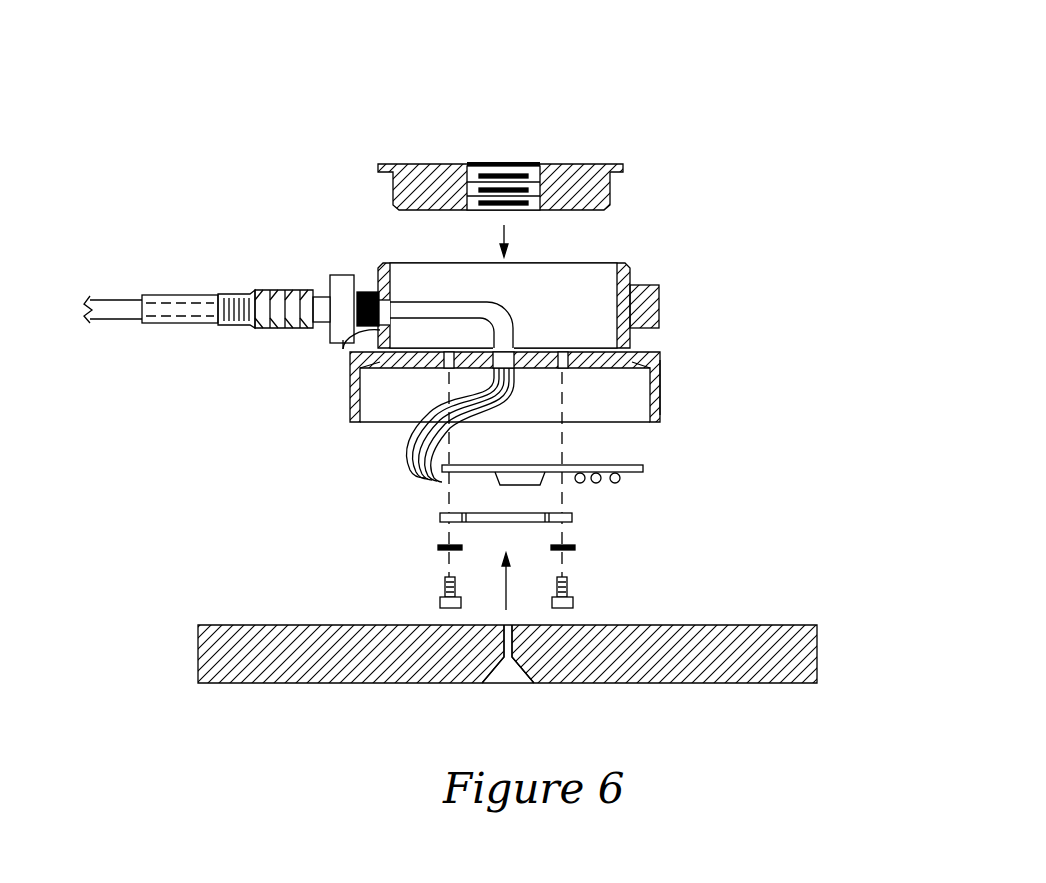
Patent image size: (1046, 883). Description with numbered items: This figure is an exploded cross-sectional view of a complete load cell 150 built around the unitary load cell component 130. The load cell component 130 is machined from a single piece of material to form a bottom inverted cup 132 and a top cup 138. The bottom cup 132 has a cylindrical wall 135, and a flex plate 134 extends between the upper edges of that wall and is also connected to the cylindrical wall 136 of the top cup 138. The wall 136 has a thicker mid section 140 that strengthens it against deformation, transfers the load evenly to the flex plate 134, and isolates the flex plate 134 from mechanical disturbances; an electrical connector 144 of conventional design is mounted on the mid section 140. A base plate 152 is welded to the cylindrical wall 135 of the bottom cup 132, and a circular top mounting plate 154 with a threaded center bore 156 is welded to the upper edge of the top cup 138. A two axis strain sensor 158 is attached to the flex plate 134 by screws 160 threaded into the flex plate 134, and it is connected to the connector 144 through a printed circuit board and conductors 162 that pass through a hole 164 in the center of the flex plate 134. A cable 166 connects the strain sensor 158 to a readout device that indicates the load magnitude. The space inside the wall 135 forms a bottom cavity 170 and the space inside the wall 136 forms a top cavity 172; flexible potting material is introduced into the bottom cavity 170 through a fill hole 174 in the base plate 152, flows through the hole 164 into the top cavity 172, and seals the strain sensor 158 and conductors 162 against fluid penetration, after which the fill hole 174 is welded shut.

The load cell component 130 is at (670, 276).
The bottom inverted cup 132 is at (660, 350).
The flex plate 134 is at (530, 348).
The cylindrical wall 135 is at (662, 392).
The cylindrical wall 136 is at (340, 348).
The top cup 138 is at (628, 270).
The thicker mid section 140 is at (655, 312).
The electrical connector 144 is at (372, 290).
The load cell 150 is at (710, 108).
The base plate 152 is at (783, 642).
The circular top mounting plate 154 is at (565, 186).
The threaded center bore 156 is at (492, 188).
The two axis strain sensor 158 is at (573, 518).
The screws 160 is at (440, 590).
The conductors 162 is at (410, 455).
The hole 164 is at (542, 457).
The cable 166 is at (190, 300).
The bottom cavity 170 is at (625, 409).
The top cavity 172 is at (553, 298).
The fill hole 174 is at (495, 684).